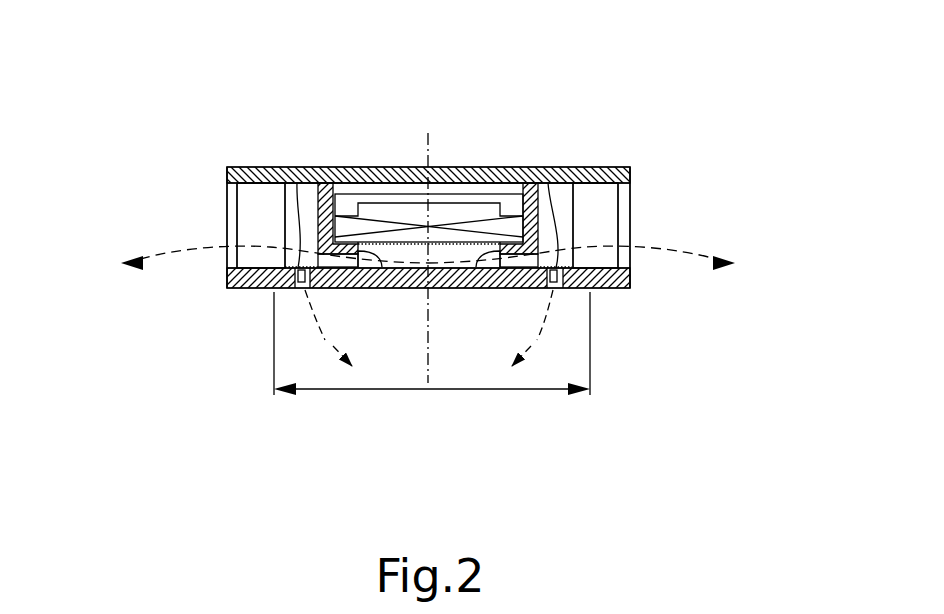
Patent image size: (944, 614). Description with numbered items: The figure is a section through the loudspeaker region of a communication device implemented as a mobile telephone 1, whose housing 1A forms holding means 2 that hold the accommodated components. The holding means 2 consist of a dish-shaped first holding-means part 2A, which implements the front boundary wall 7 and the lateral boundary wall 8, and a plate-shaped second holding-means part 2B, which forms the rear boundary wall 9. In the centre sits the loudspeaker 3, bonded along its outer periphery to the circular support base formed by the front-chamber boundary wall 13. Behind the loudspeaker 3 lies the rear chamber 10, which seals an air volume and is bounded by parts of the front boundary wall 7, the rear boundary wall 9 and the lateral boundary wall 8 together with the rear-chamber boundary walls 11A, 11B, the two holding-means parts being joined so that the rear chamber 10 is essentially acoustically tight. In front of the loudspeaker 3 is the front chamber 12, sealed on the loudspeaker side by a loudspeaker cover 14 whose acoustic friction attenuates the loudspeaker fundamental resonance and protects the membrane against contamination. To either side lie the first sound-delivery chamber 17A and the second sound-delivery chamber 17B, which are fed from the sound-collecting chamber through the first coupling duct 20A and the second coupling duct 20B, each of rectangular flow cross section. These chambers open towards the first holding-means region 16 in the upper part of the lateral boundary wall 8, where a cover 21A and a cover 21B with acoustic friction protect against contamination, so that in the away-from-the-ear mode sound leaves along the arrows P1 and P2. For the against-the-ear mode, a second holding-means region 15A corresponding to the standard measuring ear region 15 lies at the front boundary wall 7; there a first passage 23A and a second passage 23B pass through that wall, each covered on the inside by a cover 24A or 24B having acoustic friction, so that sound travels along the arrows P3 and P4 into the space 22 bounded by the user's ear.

The mobile telephone 1 is at (750, 113).
The housing 1A is at (413, 160).
The holding means 2 is at (728, 156).
The first holding-means part 2A is at (250, 316).
The second holding-means part 2B is at (355, 105).
The loudspeaker 3 is at (443, 167).
The front boundary wall 7 is at (235, 292).
The lateral boundary wall 8 is at (222, 175).
The rear boundary wall 9 is at (236, 165).
The rear chamber 10 is at (482, 170).
The rear-chamber boundary wall 11A is at (346, 180).
The rear-chamber boundary wall 11B is at (505, 172).
The front chamber 12 is at (436, 290).
The front-chamber boundary wall 13 is at (364, 288).
The loudspeaker cover 14 is at (405, 291).
The standard measuring ear region 15 is at (411, 391).
The second holding-means region 15A is at (402, 366).
The first holding-means region 16 is at (128, 194).
The first sound-delivery chamber 17A is at (268, 212).
The second sound-delivery chamber 17B is at (592, 212).
The first coupling duct 20A is at (328, 289).
The second coupling duct 20B is at (531, 287).
The cover 21A is at (228, 239).
The cover 21B is at (630, 240).
The space bounded by the ear 22 is at (362, 408).
The first passage 23A is at (303, 290).
The second passage 23B is at (560, 290).
The cover 24A is at (286, 182).
The cover 24B is at (552, 167).
The arrow P1 is at (193, 255).
The arrow P2 is at (690, 258).
The arrow P3 is at (323, 338).
The arrow P4 is at (543, 330).